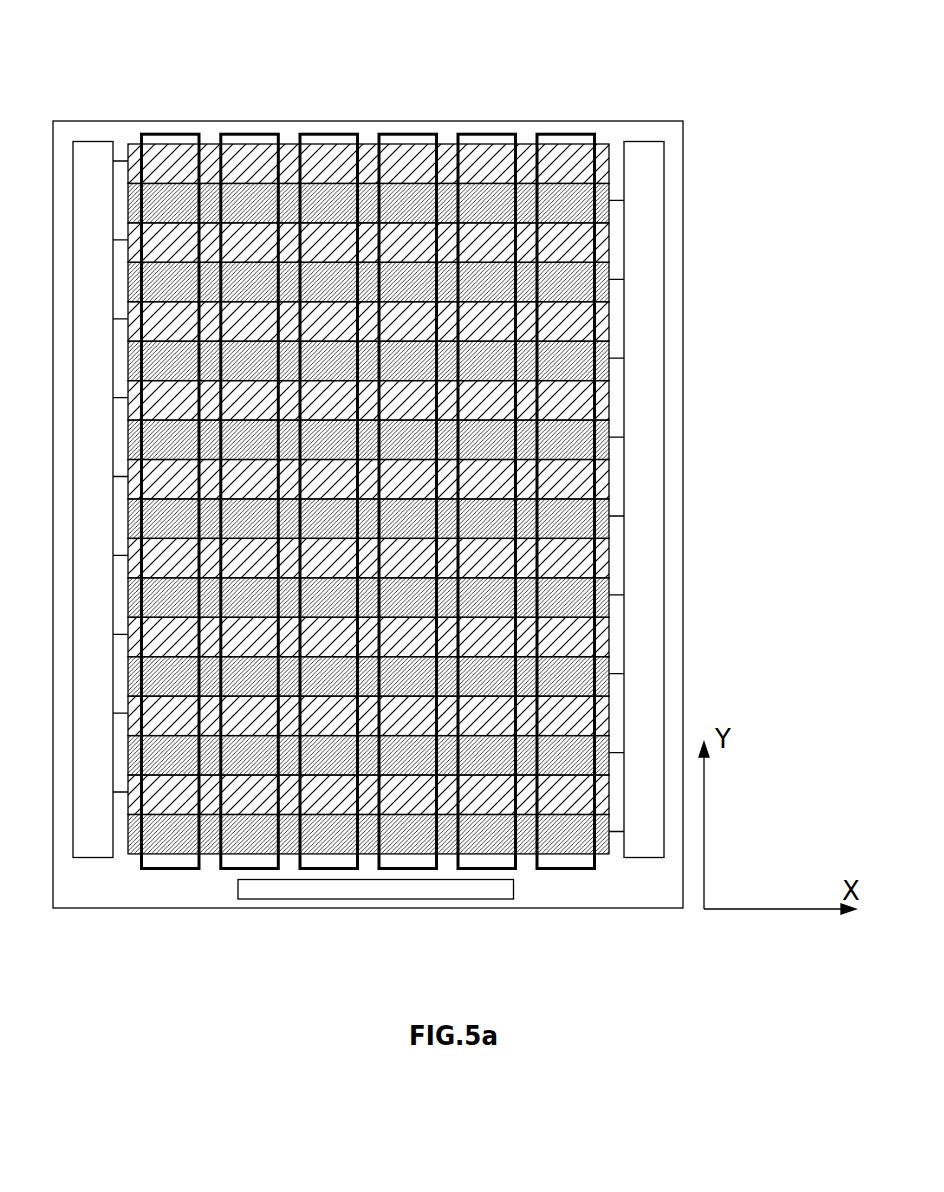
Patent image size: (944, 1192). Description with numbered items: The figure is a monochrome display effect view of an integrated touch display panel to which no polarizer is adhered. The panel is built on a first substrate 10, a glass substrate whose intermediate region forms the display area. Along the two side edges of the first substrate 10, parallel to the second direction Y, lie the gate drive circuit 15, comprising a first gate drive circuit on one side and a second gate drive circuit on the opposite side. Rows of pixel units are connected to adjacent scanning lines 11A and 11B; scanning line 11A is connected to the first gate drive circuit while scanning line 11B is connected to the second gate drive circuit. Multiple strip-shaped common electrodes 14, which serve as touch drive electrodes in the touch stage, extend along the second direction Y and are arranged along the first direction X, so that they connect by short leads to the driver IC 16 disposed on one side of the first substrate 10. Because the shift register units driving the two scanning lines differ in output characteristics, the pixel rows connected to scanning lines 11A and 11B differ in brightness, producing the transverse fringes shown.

The first substrate 10 is at (684, 491).
The scanning line 11A is at (570, 332).
The scanning line 11B is at (570, 369).
The strip-shaped common electrode 14 is at (323, 132).
The gate drive circuit 15 is at (95, 139).
The driver IC 16 is at (481, 885).